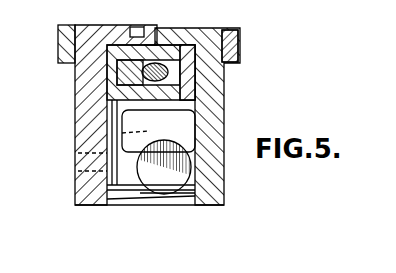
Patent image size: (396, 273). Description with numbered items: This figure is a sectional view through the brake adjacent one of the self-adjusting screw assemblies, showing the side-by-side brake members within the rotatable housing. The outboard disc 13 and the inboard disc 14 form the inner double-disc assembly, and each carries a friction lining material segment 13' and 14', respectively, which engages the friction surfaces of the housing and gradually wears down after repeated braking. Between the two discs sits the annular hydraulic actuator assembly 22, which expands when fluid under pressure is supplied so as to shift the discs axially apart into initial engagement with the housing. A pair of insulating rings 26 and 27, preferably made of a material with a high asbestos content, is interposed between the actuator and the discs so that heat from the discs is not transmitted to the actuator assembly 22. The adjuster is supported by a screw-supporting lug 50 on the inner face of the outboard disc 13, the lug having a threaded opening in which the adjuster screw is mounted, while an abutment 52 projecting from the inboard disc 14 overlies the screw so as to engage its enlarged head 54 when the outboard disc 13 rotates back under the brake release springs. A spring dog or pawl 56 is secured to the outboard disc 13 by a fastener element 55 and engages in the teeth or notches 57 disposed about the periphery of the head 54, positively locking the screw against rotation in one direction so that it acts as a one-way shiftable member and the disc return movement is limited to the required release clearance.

The outboard brake disc 13 is at (116, 104).
The friction lining material segment 13' is at (56, 32).
The inboard brake disc 14 is at (248, 46).
The friction lining material segment 14' is at (214, 113).
The hydraulic actuator assembly 22 is at (148, 44).
The insulating ring 26 is at (107, 80).
The insulating ring 27 is at (222, 83).
The screw-supporting lug 50 is at (128, 204).
The abutment 52 is at (134, 122).
The enlarged screw head 54 is at (184, 186).
The fastener element 55 is at (110, 160).
The spring dog or pawl 56 is at (113, 200).
The teeth or notches 57 is at (163, 196).